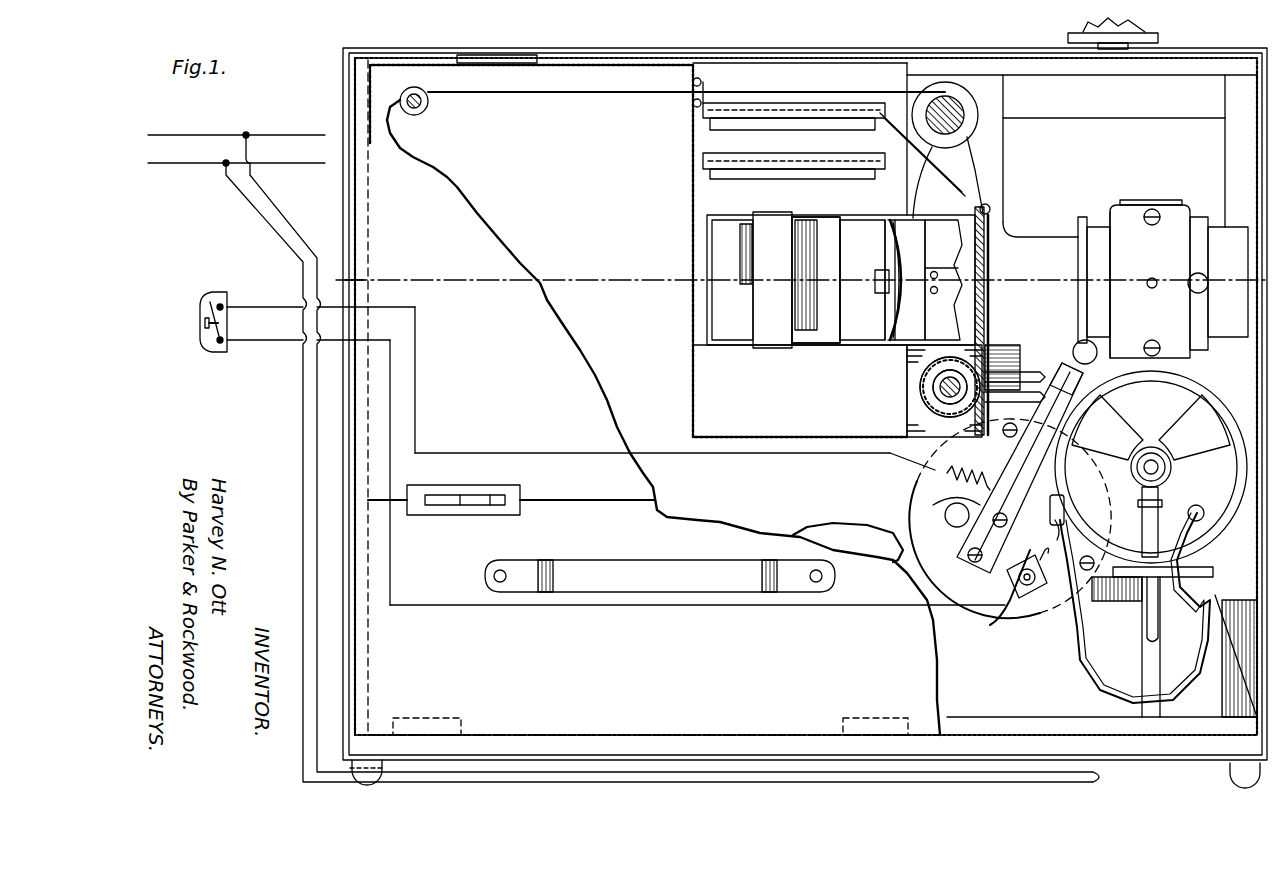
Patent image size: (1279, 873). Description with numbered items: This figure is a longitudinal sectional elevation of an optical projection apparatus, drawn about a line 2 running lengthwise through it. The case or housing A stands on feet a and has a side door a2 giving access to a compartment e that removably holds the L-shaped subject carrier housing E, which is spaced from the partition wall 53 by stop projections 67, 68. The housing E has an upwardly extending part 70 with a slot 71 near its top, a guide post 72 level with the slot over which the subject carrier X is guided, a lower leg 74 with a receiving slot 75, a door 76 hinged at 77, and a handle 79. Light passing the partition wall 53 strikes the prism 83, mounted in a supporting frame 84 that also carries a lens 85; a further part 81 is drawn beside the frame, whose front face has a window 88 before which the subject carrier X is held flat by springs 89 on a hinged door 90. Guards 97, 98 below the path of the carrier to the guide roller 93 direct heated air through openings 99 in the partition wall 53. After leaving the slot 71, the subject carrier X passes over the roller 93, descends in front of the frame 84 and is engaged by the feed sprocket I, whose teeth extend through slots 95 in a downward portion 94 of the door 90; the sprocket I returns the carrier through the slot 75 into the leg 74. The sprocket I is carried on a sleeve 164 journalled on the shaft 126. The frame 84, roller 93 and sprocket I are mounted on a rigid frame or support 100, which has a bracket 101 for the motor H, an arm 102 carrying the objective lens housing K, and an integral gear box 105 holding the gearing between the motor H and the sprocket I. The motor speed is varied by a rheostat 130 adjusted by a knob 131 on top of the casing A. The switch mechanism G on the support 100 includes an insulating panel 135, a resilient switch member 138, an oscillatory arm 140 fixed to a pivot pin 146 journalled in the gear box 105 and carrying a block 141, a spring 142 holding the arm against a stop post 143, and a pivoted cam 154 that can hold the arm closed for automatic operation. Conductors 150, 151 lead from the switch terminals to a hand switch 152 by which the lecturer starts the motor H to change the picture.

The case or housing A is at (672, 44).
The feet a is at (370, 775).
The door or opening a2 is at (768, 735).
The compartment e is at (360, 92).
The optical axis 2 is at (791, 280).
The partition wall 53 is at (800, 391).
The stop projection 67 is at (462, 718).
The stop projection 68 is at (523, 60).
The upwardly extending part 70 is at (527, 142).
The slot 71 is at (790, 66).
The guide post 72 is at (428, 106).
The lower extension or leg 74 is at (825, 491).
The receiving slot or opening 75 is at (945, 440).
The door or opening 76 is at (450, 369).
The hinge 77 is at (497, 485).
The handle 79 is at (652, 560).
The lamp housing 81 is at (970, 326).
The prism 83 is at (816, 280).
The supporting frame 84 is at (862, 218).
The lens 85 is at (900, 268).
The window or aperture 88 is at (990, 292).
The springs 89 is at (990, 205).
The door or hinged part 90 is at (992, 243).
The roller or guide 93 is at (960, 103).
The downwardly extending portion 94 is at (985, 402).
The slots 95 is at (985, 380).
The shield or guard 97 is at (840, 118).
The shield or guard 98 is at (830, 170).
The openings 99 is at (743, 175).
The frame or support 100 is at (1075, 655).
The bracket 101 is at (1158, 622).
The arm 102 is at (1183, 360).
The gear box 105 is at (1040, 338).
The shaft 126 is at (932, 400).
The rheostat 130 is at (1082, 151).
The handle or knob 131 is at (1160, 38).
The insulating panel 135 is at (958, 588).
The spring or switch member 138 is at (993, 600).
The oscillatory arm 140 is at (1022, 472).
The block 141 is at (1031, 496).
The spring 142 is at (968, 463).
The stop post 143 is at (947, 509).
The pin or pivot 146 is at (1095, 362).
The conductor 150 is at (722, 456).
The conductor 151 is at (805, 607).
The switch or push button 152 is at (214, 352).
The cam 154 is at (905, 530).
The sleeve 164 is at (902, 373).
The subject carrier housing E is at (638, 251).
The subject carrier X is at (648, 97).
The objective lens housing or mounting K is at (1163, 279).
The feed sprocket I is at (918, 390).
The motor H is at (1151, 474).
The motor controlling switch mechanism G is at (1010, 618).